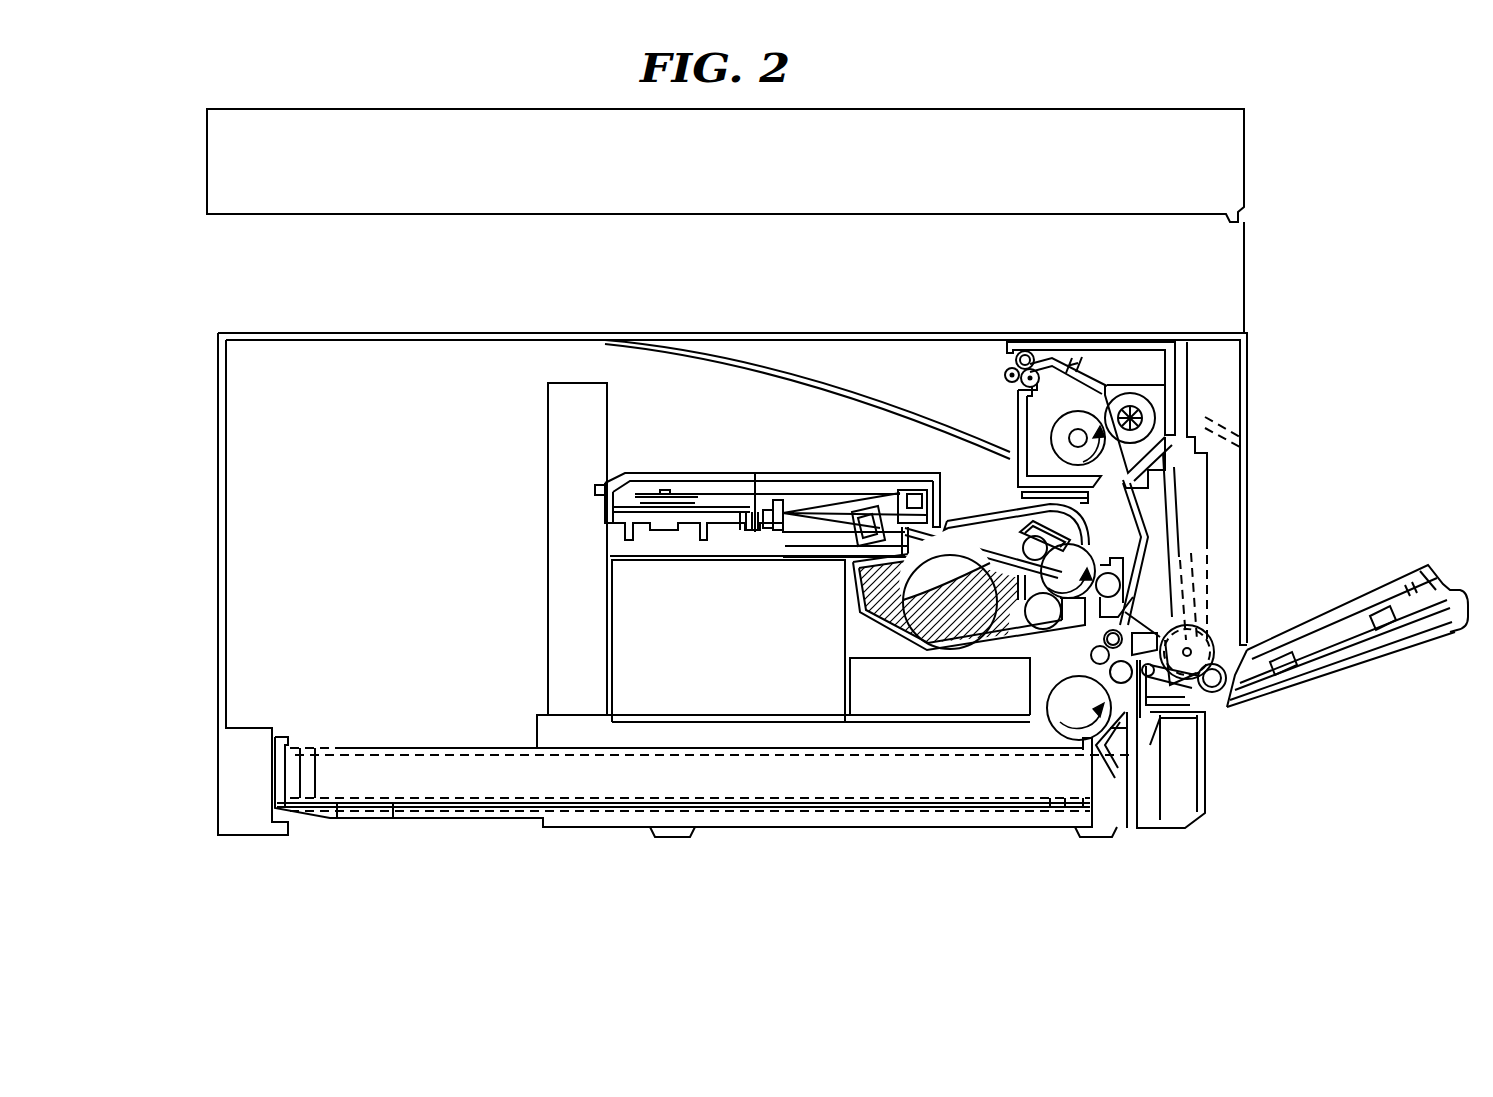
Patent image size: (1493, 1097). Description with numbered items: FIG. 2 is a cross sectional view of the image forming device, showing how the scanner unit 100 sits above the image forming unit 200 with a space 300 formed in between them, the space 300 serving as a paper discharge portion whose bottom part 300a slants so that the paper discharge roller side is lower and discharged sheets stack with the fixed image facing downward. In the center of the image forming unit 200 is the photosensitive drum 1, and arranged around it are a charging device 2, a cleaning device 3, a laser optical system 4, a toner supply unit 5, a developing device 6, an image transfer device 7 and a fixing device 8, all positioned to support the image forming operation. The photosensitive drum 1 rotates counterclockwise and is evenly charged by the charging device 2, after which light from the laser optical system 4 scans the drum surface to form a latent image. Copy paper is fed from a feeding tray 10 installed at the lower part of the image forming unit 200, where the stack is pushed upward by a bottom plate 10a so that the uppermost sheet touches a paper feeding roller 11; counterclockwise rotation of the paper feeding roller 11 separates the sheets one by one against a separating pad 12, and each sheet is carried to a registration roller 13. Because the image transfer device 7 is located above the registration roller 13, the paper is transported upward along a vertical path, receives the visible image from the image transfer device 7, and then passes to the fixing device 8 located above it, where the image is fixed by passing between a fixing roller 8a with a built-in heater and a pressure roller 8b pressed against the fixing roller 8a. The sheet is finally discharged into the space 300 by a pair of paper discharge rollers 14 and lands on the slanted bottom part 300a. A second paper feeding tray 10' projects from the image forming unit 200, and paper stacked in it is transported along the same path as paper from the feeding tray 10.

The scanner unit 100 is at (1238, 167).
The image forming unit 200 is at (1247, 410).
The space 300 is at (258, 285).
The bottom part 300a is at (752, 355).
The photosensitive drum 1 is at (1087, 558).
The charging device 2 is at (1035, 543).
The cleaning device 3 is at (1080, 530).
The laser optical system 4 is at (815, 478).
The toner supply unit 5 is at (866, 600).
The developing device 6 is at (1045, 622).
The image transfer device 7 is at (1115, 585).
The fixing device 8 is at (1096, 403).
The fixing roller 8a is at (1147, 417).
The pressure roller 8b is at (1075, 437).
The feeding tray 10 is at (702, 815).
The bottom plate 10a is at (897, 805).
The second paper feeding tray 10' is at (1350, 636).
The paper feeding roller 11 is at (1058, 702).
The separating pad 12 is at (1110, 735).
The registration roller 13 is at (1096, 680).
The paper discharge rollers 14 is at (1005, 376).